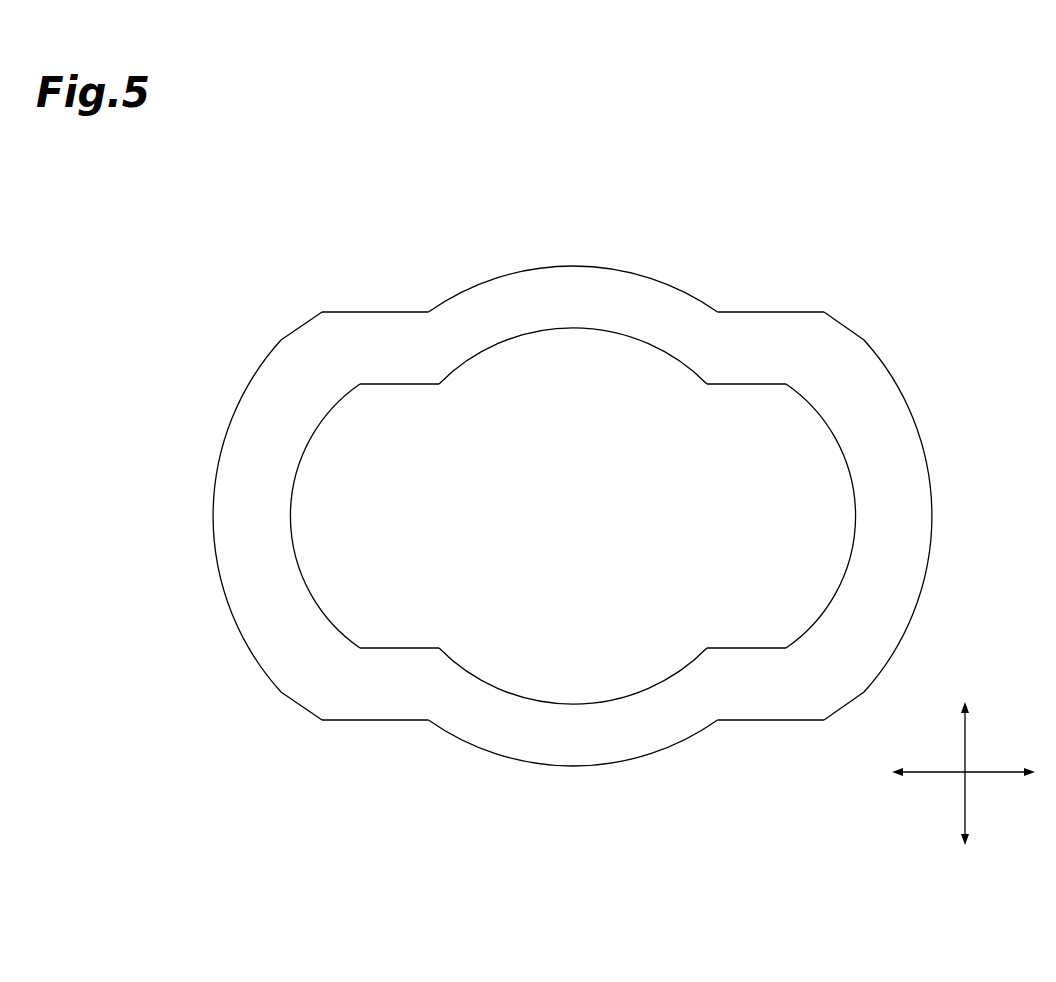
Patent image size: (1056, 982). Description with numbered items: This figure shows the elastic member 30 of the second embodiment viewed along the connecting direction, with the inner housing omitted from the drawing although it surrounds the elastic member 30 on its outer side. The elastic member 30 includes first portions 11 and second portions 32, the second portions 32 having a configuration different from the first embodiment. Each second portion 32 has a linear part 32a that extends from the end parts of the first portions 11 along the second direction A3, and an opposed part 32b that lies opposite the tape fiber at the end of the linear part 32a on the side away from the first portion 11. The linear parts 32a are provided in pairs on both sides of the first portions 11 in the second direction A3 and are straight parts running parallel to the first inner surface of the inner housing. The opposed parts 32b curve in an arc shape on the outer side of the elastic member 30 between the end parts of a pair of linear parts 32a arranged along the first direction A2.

The elastic member 30 is at (566, 491).
The first portion 11 is at (578, 277).
The second portion 32 is at (566, 516).
The linear part 32a is at (369, 325).
The opposed part 32b is at (235, 450).
The first direction A2 is at (965, 742).
The second direction A3 is at (930, 775).